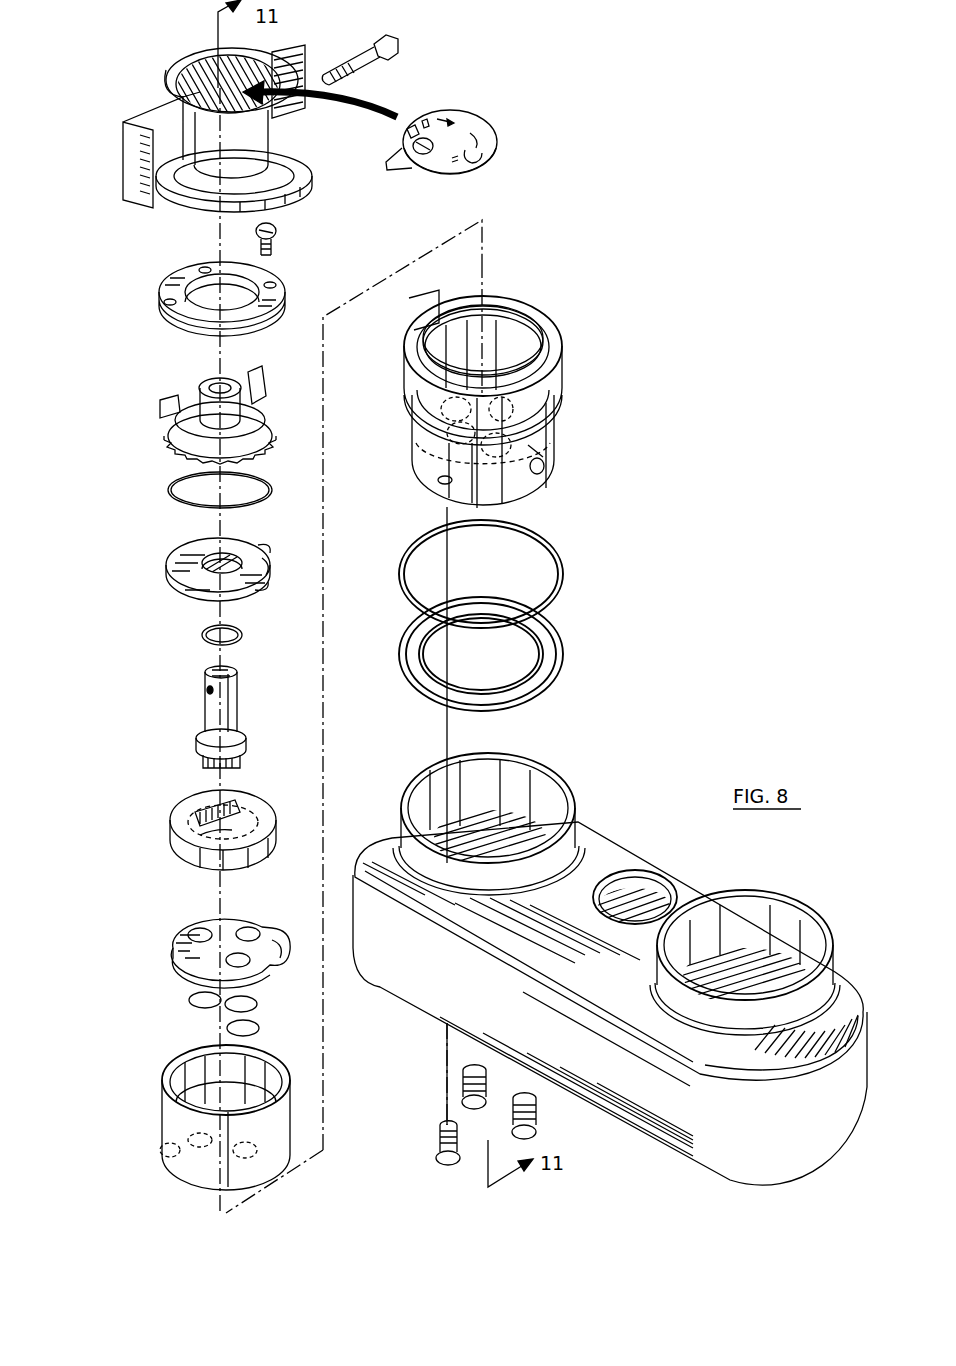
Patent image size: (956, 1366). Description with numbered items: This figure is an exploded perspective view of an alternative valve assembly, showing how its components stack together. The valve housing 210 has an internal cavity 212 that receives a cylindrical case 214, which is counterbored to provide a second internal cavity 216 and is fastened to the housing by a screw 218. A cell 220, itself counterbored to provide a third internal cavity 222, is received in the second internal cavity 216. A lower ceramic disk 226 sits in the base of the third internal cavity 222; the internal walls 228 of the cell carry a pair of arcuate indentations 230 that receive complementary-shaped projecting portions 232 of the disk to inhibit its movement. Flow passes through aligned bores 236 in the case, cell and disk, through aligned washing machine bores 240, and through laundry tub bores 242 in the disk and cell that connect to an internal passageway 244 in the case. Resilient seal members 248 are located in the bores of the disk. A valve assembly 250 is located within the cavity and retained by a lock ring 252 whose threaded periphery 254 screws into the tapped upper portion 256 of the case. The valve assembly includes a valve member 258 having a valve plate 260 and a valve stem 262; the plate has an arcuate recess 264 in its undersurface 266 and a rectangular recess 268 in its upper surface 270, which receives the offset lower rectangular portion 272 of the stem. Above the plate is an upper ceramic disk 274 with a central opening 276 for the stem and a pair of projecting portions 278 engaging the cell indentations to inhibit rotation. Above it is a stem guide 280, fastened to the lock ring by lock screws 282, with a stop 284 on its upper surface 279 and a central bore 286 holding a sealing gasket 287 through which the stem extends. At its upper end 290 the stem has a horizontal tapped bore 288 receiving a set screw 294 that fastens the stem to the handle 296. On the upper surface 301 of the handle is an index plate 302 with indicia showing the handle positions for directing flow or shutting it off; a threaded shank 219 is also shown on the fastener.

The valve housing 210 is at (378, 825).
The internal cavity 212 is at (522, 838).
The cylindrical case 214 is at (562, 378).
The second internal cavity 216 is at (520, 352).
The screw 218 is at (438, 1140).
The threaded shank 219 is at (334, 70).
The cell 220 is at (178, 1057).
The third internal cavity 222 is at (190, 1083).
The lower ceramic disk 226 is at (170, 943).
The internal walls 228 is at (213, 1080).
The arcuate indentations 230 is at (272, 1070).
The projecting portions 232 is at (290, 950).
The bores 236 is at (247, 923).
The washing machine bores 240 is at (195, 917).
The laundry tub bores 242 is at (180, 977).
The internal passageway 244 is at (540, 474).
The resilient seal members 248 is at (263, 1028).
The valve assembly 250 is at (110, 834).
The lock ring 252 is at (170, 272).
The periphery 254 is at (177, 337).
The tapped upper portion 256 is at (512, 320).
The valve member 258 is at (178, 777).
The valve plate 260 is at (235, 790).
The valve stem 262 is at (237, 702).
The arcuate recess 264 is at (263, 800).
The undersurface 266 is at (253, 860).
The rectangular recess 268 is at (177, 832).
The upper surface 270 is at (205, 842).
The offset lower rectangular portion 272 is at (200, 745).
The upper ceramic disk 274 is at (189, 598).
The opening 276 is at (213, 565).
The projecting portions 278 is at (263, 550).
The upper surface 279 is at (167, 422).
The stem guide 280 is at (175, 457).
The lock screws 282 is at (280, 232).
The stop 284 is at (252, 378).
The central bore 286 is at (215, 383).
The sealing gasket 287 is at (240, 637).
The horizontal tapped bore 288 is at (207, 687).
The upper end 290 is at (205, 672).
The set screw 294 is at (368, 63).
The handle 296 is at (192, 207).
The upper surface 301 is at (282, 55).
The index plate 302 is at (470, 118).